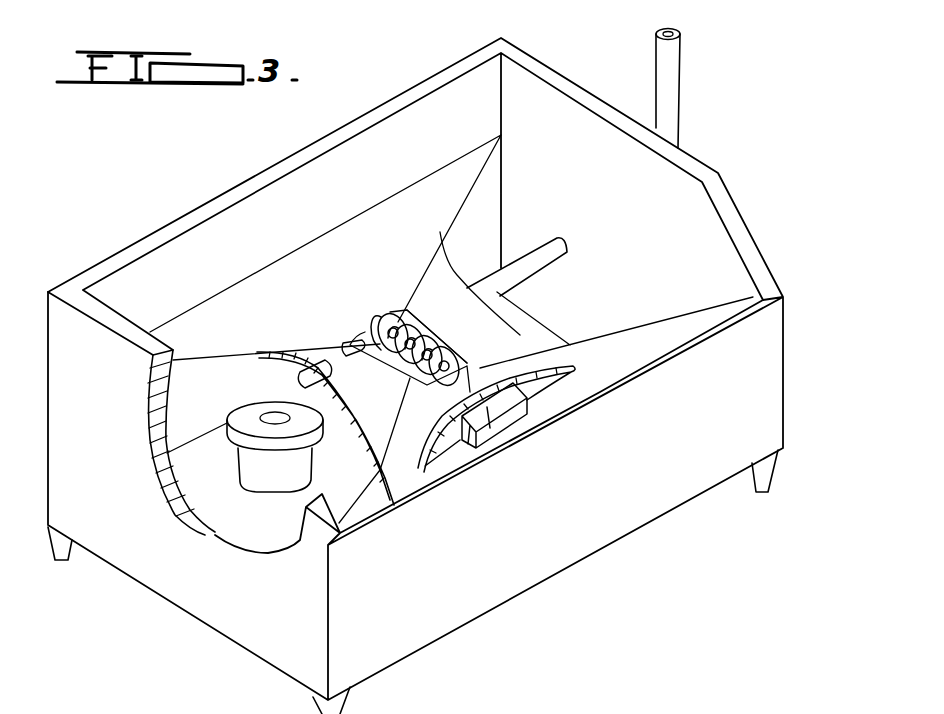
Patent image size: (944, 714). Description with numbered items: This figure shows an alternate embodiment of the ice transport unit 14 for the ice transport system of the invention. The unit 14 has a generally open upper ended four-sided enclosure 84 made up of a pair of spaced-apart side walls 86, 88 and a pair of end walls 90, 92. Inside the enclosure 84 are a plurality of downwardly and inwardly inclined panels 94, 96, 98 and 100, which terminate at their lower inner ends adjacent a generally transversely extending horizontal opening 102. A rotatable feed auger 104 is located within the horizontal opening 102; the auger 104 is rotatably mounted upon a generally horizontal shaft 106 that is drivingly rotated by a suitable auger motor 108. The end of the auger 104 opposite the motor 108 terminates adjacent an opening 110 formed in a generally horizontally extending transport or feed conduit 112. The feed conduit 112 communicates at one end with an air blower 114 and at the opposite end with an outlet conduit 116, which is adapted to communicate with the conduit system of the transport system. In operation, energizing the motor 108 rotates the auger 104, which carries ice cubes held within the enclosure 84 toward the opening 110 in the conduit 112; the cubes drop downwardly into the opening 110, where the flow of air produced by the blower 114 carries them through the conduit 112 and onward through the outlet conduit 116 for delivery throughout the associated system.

The ice transport unit 14 is at (775, 207).
The enclosure 84 is at (583, 565).
The side wall 86 is at (568, 494).
The side wall 88 is at (332, 202).
The end wall 90 is at (646, 192).
The end wall 92 is at (122, 474).
The inclined panel 94 is at (385, 272).
The inclined panel 96 is at (390, 398).
The inclined panel 98 is at (418, 472).
The inclined panel 100 is at (482, 330).
The horizontal opening 102 is at (418, 380).
The feed auger 104 is at (470, 355).
The shaft 106 is at (480, 360).
The auger motor 108 is at (520, 400).
The opening 110 is at (378, 370).
The feed conduit 112 is at (518, 267).
The air blower 114 is at (250, 487).
The outlet conduit 116 is at (672, 92).